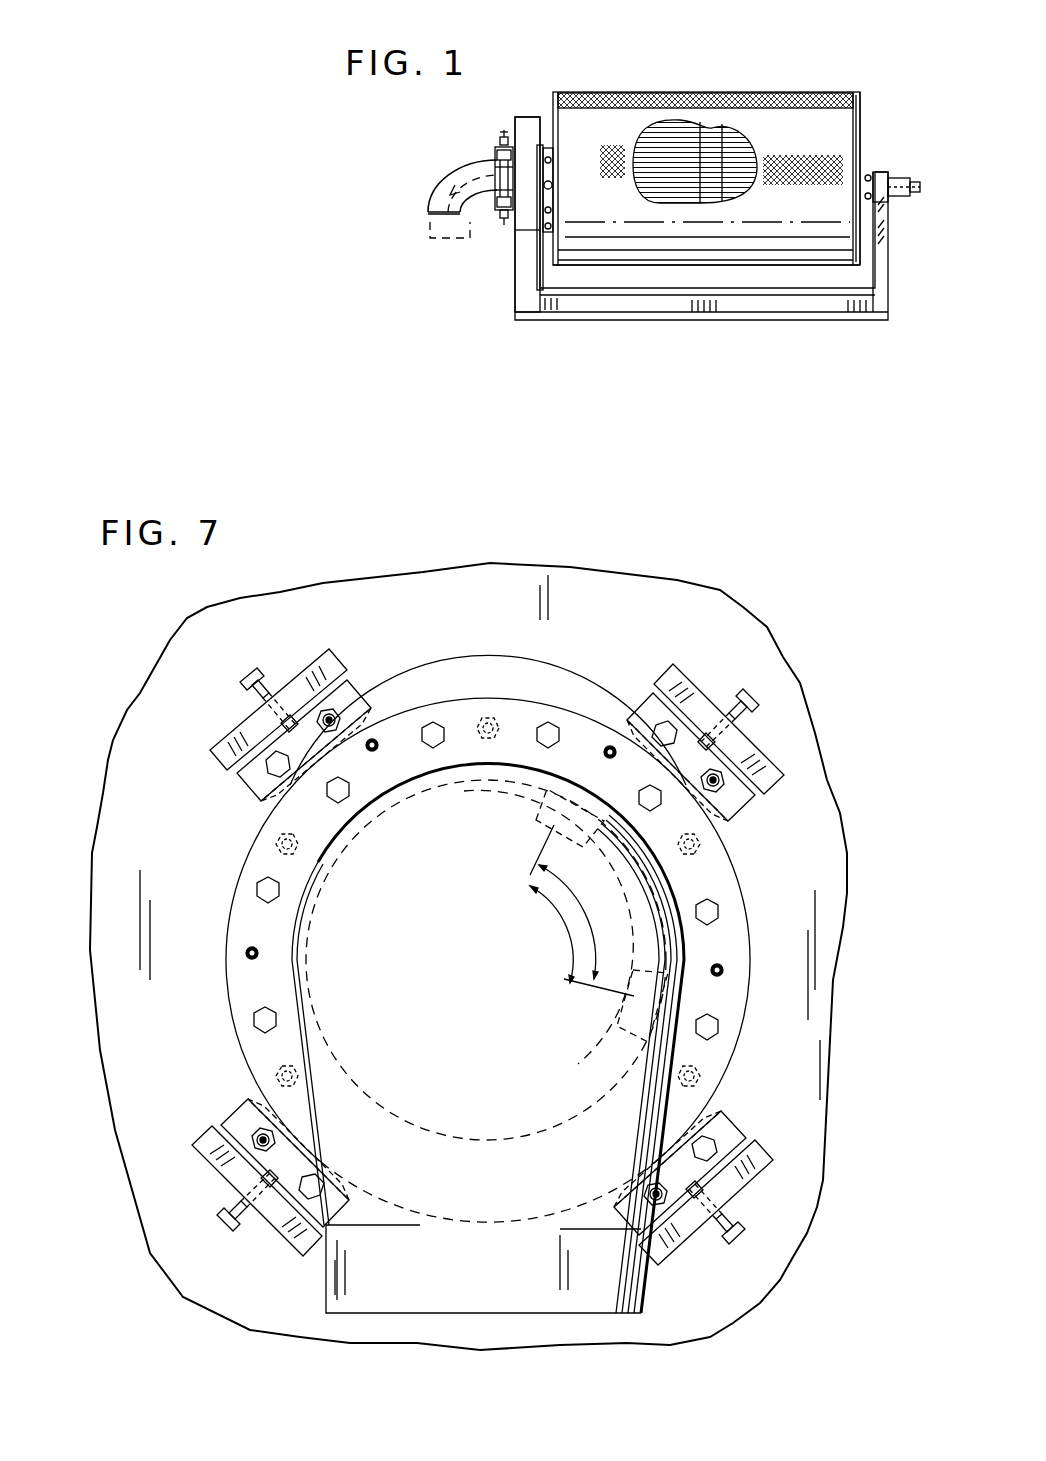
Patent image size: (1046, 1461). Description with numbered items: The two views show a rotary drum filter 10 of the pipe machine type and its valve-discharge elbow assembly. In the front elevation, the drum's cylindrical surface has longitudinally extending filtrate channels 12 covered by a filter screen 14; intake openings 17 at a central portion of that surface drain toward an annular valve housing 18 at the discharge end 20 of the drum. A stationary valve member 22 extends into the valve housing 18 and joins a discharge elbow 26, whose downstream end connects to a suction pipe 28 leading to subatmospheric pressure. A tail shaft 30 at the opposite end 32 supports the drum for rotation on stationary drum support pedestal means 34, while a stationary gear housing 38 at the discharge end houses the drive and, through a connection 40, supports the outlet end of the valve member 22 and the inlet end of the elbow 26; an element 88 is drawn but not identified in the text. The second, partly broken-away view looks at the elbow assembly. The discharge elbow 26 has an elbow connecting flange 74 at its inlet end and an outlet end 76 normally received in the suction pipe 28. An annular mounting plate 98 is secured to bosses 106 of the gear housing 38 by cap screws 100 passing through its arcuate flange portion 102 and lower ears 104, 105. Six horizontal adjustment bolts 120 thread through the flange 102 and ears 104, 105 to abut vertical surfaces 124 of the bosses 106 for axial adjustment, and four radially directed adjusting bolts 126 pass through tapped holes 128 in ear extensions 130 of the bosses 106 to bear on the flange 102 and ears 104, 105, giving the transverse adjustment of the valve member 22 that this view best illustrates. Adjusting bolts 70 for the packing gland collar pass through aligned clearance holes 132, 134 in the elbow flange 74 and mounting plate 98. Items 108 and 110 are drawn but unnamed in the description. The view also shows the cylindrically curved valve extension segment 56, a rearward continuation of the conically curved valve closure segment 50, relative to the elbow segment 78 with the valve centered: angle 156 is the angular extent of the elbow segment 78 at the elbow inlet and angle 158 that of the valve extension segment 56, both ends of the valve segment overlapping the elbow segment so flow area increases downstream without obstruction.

In FIG. 1, the rotary drum filter 10 is at (716, 149).
In FIG. 1, the filtrate channels 12 is at (730, 128).
In FIG. 1, the filter screen 14 is at (627, 115).
In FIG. 1, the intake openings 17 is at (698, 140).
In FIG. 1, the annular valve housing 18 is at (546, 203).
In FIG. 1, the discharge end 20 is at (550, 250).
In FIG. 1, the stationary valve member 22 is at (497, 208).
In FIG. 1, the discharge elbow 26 is at (452, 162).
In FIG. 7, the discharge elbow 26 is at (298, 1048).
In FIG. 1, the suction pipe 28 is at (430, 228).
In FIG. 1, the tail shaft 30 is at (890, 193).
In FIG. 1, the opposite end 32 is at (862, 110).
In FIG. 1, the stationary drum support pedestal means 34 is at (882, 172).
In FIG. 1, the stationary gear housing 38 is at (528, 117).
In FIG. 7, the stationary gear housing 38 is at (680, 583).
In FIG. 1, the connection 40 is at (504, 122).
In FIG. 7, the valve closure segment 50 is at (606, 1050).
In FIG. 7, the extension segment 56 is at (550, 793).
In FIG. 7, the adjusting bolts 70 is at (374, 740).
In FIG. 7, the elbow connecting flange 74 is at (240, 915).
In FIG. 7, the outlet end 76 is at (440, 1315).
In FIG. 7, the elbow segment 78 is at (537, 825).
In FIG. 1, the base 88 is at (516, 300).
In FIG. 7, the mounting plate 98 is at (732, 1000).
In FIG. 7, the cap screws 100 is at (280, 768).
In FIG. 7, the arcuate flange portion 102 is at (488, 652).
In FIG. 7, the ear 104 is at (245, 1120).
In FIG. 7, the ear 105 is at (718, 1132).
In FIG. 7, the bosses 106 is at (392, 698).
In FIG. 7, the hidden bolt 108 is at (476, 718).
In FIG. 7, the bolt 110 is at (548, 728).
In FIG. 7, the horizontal adjustment bolts 120 is at (333, 730).
In FIG. 7, the vertical surfaces 124 is at (262, 770).
In FIG. 7, the radially directed adjusting bolts 126 is at (255, 668).
In FIG. 7, the tapped holes 128 is at (262, 696).
In FIG. 7, the ear extensions 130 is at (272, 701).
In FIG. 7, the clearance holes 132 is at (504, 700).
In FIG. 7, the clearance holes 134 is at (735, 938).
In FIG. 7, the angle 156 is at (578, 880).
In FIG. 7, the angle 158 is at (583, 955).